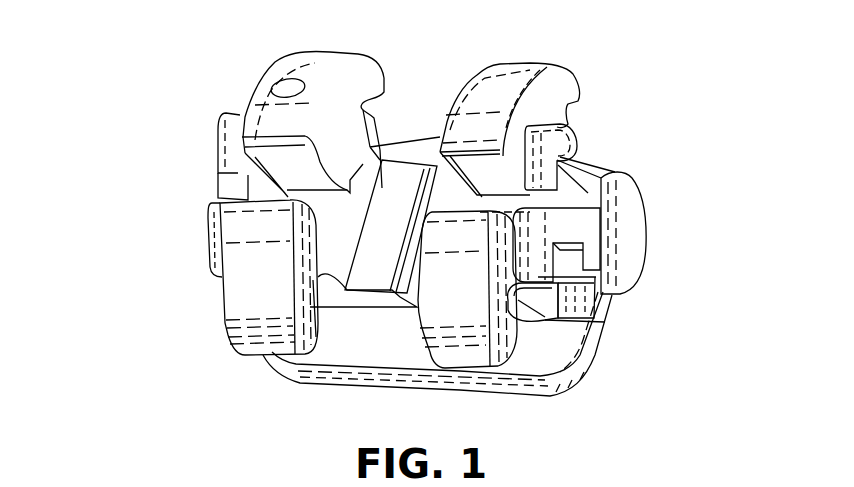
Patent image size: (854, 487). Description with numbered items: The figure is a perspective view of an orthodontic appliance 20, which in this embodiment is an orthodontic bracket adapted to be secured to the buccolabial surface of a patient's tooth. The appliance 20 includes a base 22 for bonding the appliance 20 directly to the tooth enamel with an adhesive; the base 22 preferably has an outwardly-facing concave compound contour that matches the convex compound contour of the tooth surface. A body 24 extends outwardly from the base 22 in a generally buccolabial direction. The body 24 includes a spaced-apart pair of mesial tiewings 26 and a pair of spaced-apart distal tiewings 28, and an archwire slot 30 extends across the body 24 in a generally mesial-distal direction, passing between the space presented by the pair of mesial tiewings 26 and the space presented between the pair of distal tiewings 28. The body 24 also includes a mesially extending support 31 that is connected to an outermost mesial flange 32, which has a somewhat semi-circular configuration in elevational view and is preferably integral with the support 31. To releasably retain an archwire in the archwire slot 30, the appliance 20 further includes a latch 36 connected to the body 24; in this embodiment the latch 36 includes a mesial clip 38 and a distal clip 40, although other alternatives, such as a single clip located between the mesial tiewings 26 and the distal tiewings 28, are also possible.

The orthodontic appliance 20 is at (148, 120).
The base 22 is at (598, 364).
The body 24 is at (361, 318).
The mesial tiewings 26 is at (567, 90).
The distal tiewings 28 is at (303, 64).
The archwire slot 30 is at (287, 165).
The mesially extending support 31 is at (573, 228).
The outermost mesial flange 32 is at (630, 242).
The latch 36 is at (204, 82).
The mesial clip 38 is at (575, 146).
The distal clip 40 is at (200, 241).